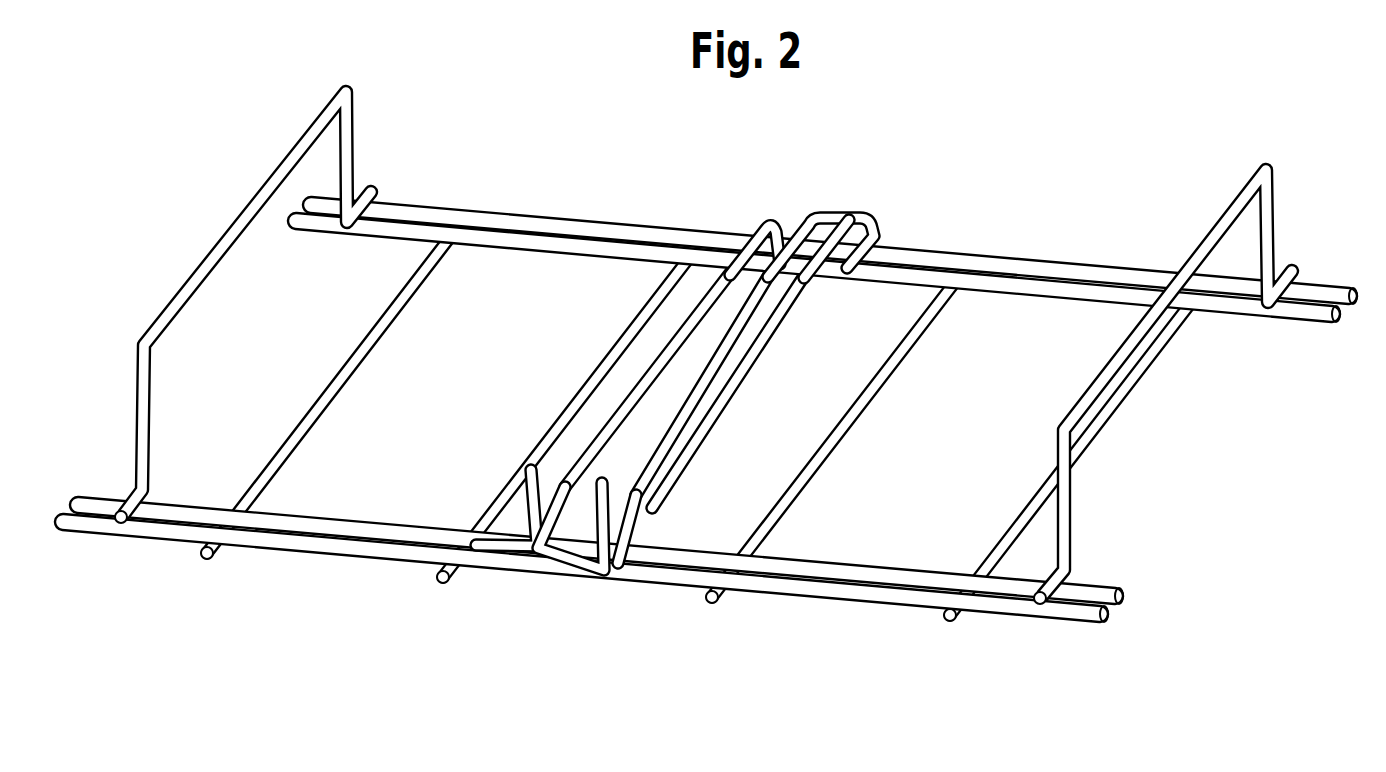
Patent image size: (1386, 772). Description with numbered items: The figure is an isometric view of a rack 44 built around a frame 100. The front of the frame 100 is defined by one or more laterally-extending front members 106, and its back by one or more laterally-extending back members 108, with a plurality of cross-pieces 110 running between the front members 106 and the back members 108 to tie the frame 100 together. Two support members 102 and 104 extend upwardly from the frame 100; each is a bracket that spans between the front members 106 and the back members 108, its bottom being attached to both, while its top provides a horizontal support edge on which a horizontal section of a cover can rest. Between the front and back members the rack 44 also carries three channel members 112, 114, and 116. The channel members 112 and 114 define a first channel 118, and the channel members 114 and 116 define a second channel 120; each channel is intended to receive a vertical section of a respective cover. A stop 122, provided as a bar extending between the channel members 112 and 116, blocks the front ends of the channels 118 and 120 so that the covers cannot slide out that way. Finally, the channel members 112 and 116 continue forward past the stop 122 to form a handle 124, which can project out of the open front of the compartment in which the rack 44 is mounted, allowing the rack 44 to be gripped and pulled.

The rack 44 is at (710, 426).
The frame 100 is at (710, 379).
The support member 102 is at (213, 257).
The support member 104 is at (1225, 215).
The front member 106 is at (918, 606).
The back member 108 is at (1015, 262).
The cross-piece 110 is at (393, 347).
The channel member 112 is at (633, 399).
The channel member 114 is at (710, 358).
The channel member 116 is at (670, 467).
The first channel 118 is at (743, 290).
The second channel 120 is at (783, 292).
The stop 122 is at (575, 540).
The handle 124 is at (505, 549).